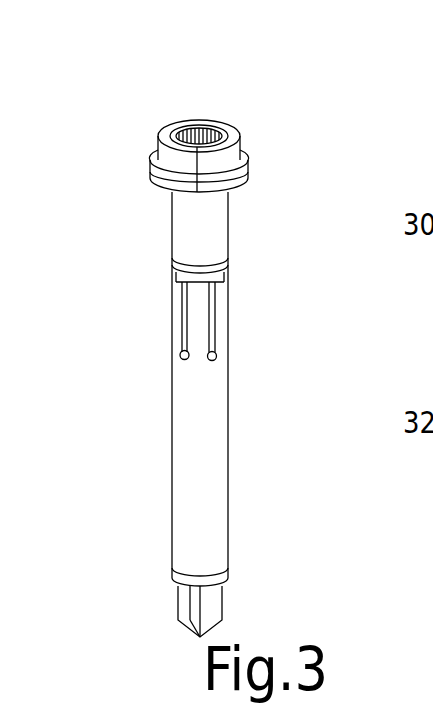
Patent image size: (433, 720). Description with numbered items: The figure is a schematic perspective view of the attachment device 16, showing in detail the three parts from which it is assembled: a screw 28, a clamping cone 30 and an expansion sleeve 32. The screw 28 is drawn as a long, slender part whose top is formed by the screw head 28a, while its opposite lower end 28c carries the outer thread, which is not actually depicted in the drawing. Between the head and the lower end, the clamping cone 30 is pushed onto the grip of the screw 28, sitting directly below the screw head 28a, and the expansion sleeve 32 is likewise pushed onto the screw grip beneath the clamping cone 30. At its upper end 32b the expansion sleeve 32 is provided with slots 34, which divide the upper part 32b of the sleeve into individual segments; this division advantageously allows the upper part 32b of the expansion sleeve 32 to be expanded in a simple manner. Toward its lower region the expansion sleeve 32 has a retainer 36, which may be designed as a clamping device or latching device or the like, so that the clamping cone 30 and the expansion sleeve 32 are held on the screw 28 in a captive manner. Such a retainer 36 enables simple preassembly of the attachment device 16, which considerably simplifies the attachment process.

The attachment device 16 is at (160, 98).
The screw 28 is at (208, 106).
The screw head 28a is at (228, 133).
The lower end of the screw 28c is at (223, 602).
The clamping cone 30 is at (170, 218).
The expansion sleeve 32 is at (185, 415).
The upper end of the expansion sleeve 32b is at (172, 325).
The slots 34 is at (182, 294).
The retainer 36 is at (228, 568).